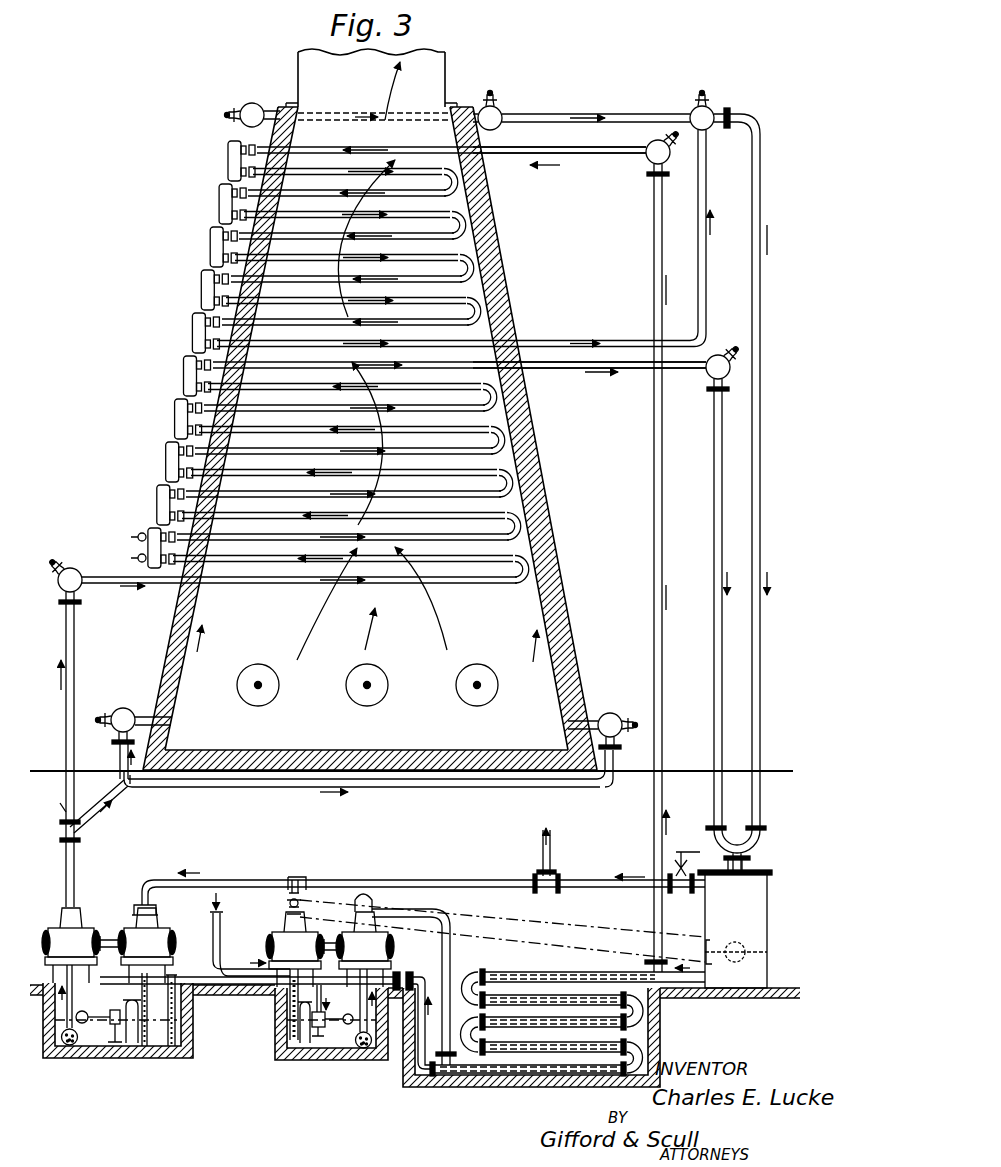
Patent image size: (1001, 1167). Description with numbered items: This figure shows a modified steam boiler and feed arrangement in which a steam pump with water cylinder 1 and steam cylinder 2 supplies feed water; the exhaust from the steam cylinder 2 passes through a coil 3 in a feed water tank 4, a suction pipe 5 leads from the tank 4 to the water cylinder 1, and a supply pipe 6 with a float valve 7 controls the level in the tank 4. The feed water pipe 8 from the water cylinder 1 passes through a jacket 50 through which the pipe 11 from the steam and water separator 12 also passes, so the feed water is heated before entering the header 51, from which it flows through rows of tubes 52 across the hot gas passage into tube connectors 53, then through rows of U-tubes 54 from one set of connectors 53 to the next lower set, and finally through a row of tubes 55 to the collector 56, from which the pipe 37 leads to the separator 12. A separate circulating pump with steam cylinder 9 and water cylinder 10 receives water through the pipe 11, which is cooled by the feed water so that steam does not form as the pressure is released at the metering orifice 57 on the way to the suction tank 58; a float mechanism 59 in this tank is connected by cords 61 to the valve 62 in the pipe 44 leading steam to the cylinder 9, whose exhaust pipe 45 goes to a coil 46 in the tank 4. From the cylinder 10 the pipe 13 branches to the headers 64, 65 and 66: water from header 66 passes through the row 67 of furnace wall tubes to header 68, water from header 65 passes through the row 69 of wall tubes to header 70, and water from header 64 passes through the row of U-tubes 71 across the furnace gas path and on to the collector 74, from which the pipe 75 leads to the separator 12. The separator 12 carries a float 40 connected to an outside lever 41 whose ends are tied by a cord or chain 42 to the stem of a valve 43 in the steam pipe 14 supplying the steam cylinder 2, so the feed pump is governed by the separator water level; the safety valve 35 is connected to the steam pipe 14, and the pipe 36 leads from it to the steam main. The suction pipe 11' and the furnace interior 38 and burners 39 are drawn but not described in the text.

The water cylinder 1 is at (380, 948).
The steam cylinder 2 is at (278, 940).
The coil 3 is at (288, 1026).
The feed water tank 4 is at (330, 1055).
The suction pipe 5 is at (355, 1030).
The pipe 6 is at (252, 967).
The float valve 7 is at (338, 1024).
The feed water pipe 8 is at (440, 970).
The steam cylinder 9 is at (162, 936).
The water cylinder 10 is at (58, 925).
The pipe 11 is at (415, 1020).
The suction pipe 11' is at (79, 1005).
The steam and water separator 12 is at (760, 932).
The pipe 13 is at (74, 870).
The steam pipe 14 is at (578, 880).
The safety valve 35 is at (668, 866).
The pipe 36 is at (550, 865).
The pipe 37 is at (754, 627).
The furnace 38 is at (370, 409).
The burners 39 is at (350, 684).
The float 40 is at (733, 940).
The lever 41 is at (682, 962).
The cord or chain 42 is at (536, 918).
The valve 43 is at (550, 372).
The pipe 44 is at (268, 868).
The exhaust pipe 45 is at (150, 973).
The coil 46 is at (168, 1055).
The jacket 50 is at (538, 1082).
The header 51 is at (646, 166).
The tubes 52 is at (500, 160).
The tube connectors 53 is at (226, 158).
The U-tubes 54 is at (312, 172).
The tubes 55 is at (577, 344).
The collector 56 is at (716, 107).
The metering orifice 57 is at (398, 972).
The suction tank 58 is at (119, 1050).
The float mechanism 59 is at (98, 1020).
The cords 61 is at (122, 976).
The valve 62 is at (134, 908).
The header 64 is at (84, 590).
The header 65 is at (133, 710).
The header 66 is at (606, 710).
The row of furnace wall tubes 67 is at (560, 592).
The header 68 is at (505, 107).
The row of furnace wall tubes 69 is at (188, 612).
The header 70 is at (249, 104).
The U-tubes 71 is at (146, 545).
The collector 74 is at (719, 356).
The pipe 75 is at (718, 452).